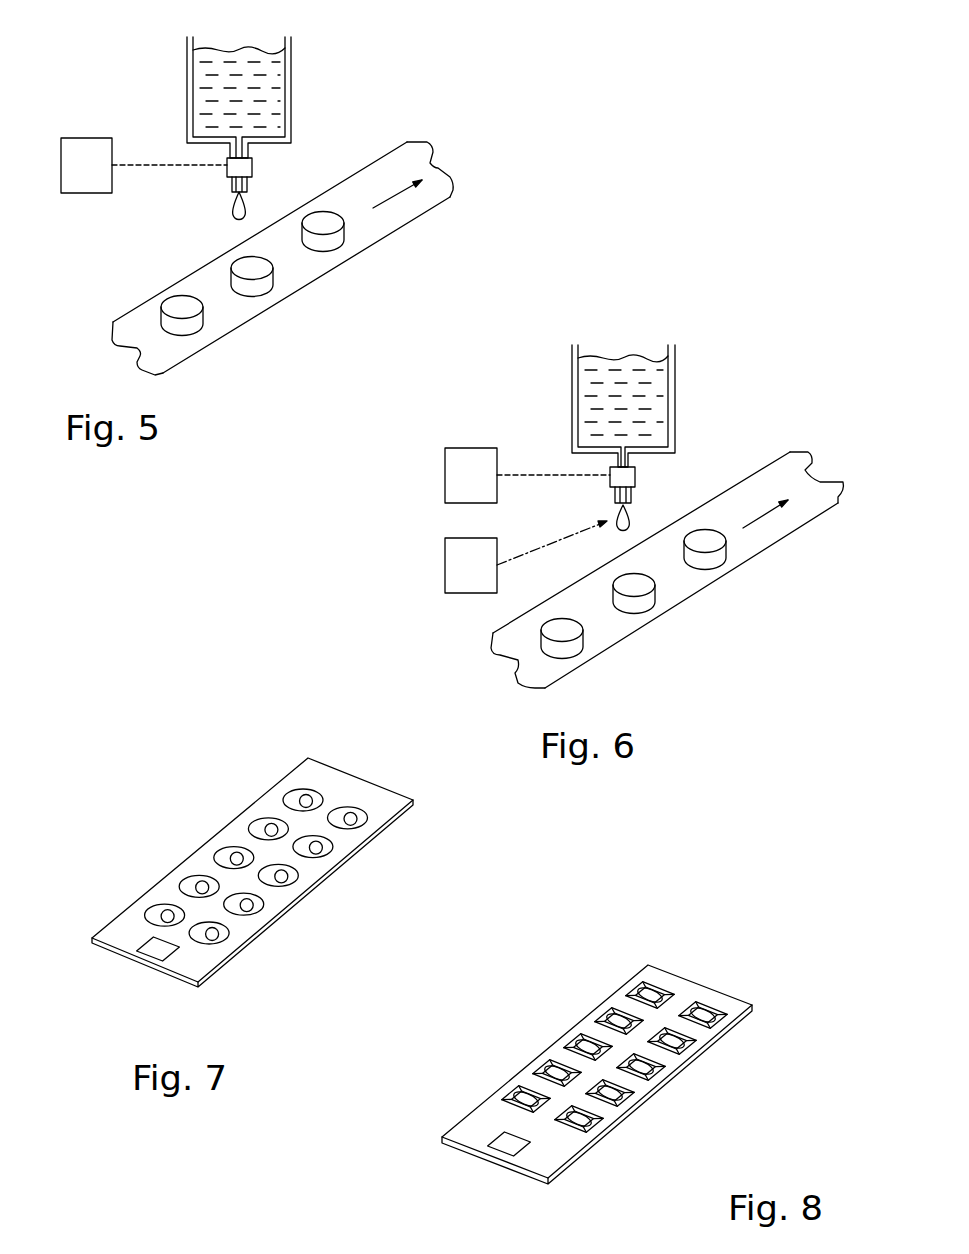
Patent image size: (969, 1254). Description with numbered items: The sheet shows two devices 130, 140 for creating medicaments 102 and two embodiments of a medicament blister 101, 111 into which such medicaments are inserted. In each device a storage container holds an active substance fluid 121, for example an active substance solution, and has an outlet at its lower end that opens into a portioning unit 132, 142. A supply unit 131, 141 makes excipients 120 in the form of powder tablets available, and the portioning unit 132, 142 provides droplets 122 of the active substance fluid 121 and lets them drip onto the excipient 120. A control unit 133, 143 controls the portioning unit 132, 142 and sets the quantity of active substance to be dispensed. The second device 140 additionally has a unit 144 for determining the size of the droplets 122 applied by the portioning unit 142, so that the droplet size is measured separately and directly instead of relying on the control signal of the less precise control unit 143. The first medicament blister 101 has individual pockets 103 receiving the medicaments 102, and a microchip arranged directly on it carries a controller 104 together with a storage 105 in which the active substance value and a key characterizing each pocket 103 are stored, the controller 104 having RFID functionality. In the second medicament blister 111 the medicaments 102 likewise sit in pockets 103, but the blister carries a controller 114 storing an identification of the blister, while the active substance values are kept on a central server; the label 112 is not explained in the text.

In FIG. 7, the medicament blister 101 is at (425, 798).
In FIG. 5, the medicament 102 is at (323, 222).
In FIG. 6, the medicament 102 is at (707, 540).
In FIG. 7, the medicament 102 is at (308, 792).
In FIG. 8, the medicament 102 is at (637, 987).
In FIG. 7, the pocket 103 is at (293, 795).
In FIG. 8, the pocket 103 is at (683, 1043).
In FIG. 7, the controller 104 is at (160, 950).
In FIG. 7, the storage 105 is at (158, 949).
In FIG. 8, the medicament blister 111 is at (703, 972).
In FIG. 5, the tablet (second embodiment) 112 is at (323, 232).
In FIG. 8, the controller 114 is at (508, 1147).
In FIG. 5, the excipient 120 is at (252, 263).
In FIG. 6, the excipient 120 is at (557, 630).
In FIG. 5, the active substance fluid 121 is at (208, 68).
In FIG. 6, the active substance fluid 121 is at (613, 397).
In FIG. 5, the droplet 122 is at (233, 210).
In FIG. 6, the droplet 122 is at (627, 512).
In FIG. 5, the device 130 is at (433, 113).
In FIG. 5, the supply unit 131 is at (330, 273).
In FIG. 5, the portioning unit 132 is at (252, 167).
In FIG. 5, the control unit 133 is at (87, 135).
In FIG. 6, the device 140 is at (727, 348).
In FIG. 6, the supply unit 141 is at (692, 595).
In FIG. 6, the portioning unit 142 is at (608, 468).
In FIG. 6, the control unit 143 is at (467, 470).
In FIG. 6, the unit for determining the size of the droplets 144 is at (467, 554).